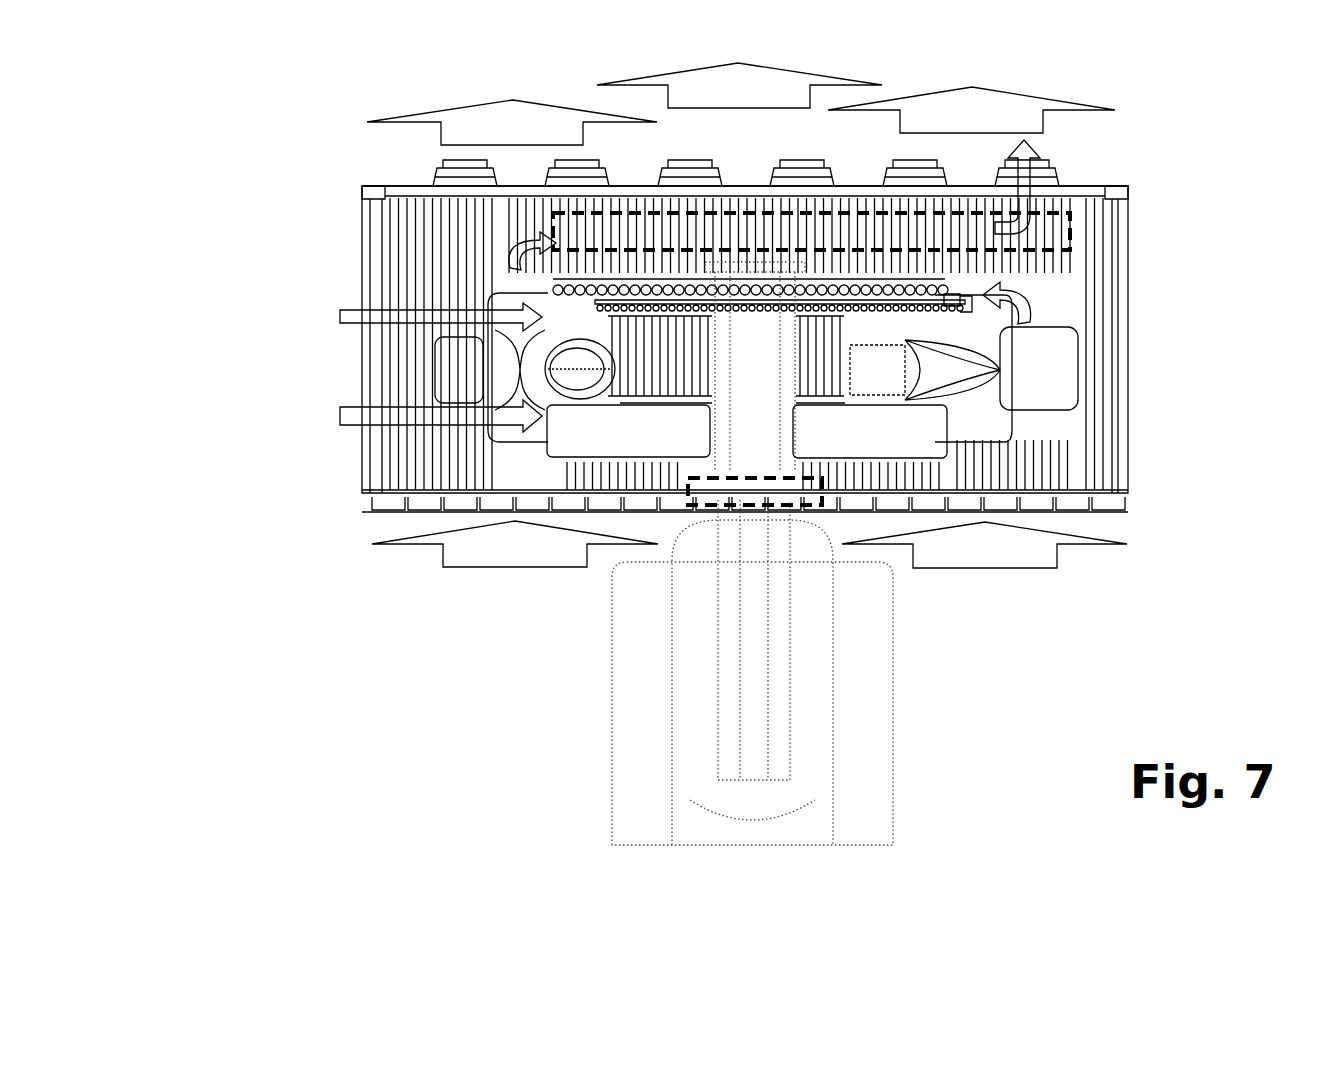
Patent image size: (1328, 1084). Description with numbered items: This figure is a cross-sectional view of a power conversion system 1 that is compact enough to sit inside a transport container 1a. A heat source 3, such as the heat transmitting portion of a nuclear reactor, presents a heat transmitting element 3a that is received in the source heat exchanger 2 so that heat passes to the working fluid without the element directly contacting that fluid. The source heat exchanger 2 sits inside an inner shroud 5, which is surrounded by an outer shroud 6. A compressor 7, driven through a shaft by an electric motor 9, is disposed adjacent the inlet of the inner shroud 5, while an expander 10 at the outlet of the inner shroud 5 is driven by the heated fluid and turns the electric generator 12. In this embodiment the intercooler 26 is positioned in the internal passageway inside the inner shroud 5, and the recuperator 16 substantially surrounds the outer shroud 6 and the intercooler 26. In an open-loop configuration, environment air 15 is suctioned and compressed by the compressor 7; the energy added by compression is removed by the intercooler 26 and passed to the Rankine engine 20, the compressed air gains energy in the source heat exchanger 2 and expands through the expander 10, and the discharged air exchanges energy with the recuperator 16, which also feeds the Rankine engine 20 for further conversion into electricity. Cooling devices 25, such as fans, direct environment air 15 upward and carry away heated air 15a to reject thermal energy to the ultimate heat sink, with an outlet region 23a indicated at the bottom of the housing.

The power conversion system 1 is at (284, 174).
The transport container 1a is at (362, 240).
The source heat exchanger 2 is at (742, 375).
The heat source 3 is at (773, 668).
The heat transmitting element 3a is at (738, 572).
The inner shroud 5 is at (630, 297).
The outer shroud 6 is at (613, 460).
The compressor 7 is at (593, 407).
The electric motor 9 is at (452, 357).
The expander 10 is at (883, 400).
The electric generator 12 is at (1047, 358).
The environment air 15 is at (372, 410).
The heated air 15a is at (550, 247).
The recuperator 16 is at (948, 300).
The Rankine engine 20 is at (1068, 230).
The outlet region 23a is at (830, 500).
The cooling device 25 is at (1062, 172).
The intercooler 26 is at (978, 330).